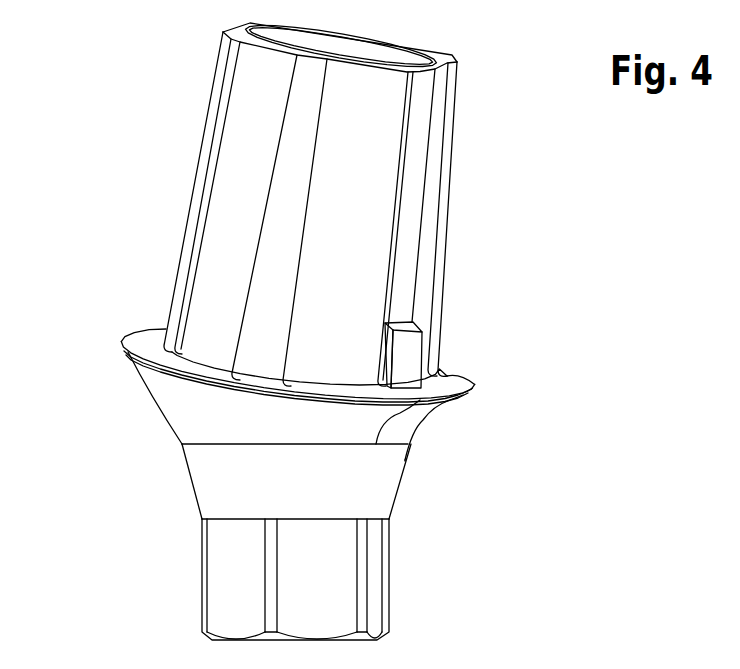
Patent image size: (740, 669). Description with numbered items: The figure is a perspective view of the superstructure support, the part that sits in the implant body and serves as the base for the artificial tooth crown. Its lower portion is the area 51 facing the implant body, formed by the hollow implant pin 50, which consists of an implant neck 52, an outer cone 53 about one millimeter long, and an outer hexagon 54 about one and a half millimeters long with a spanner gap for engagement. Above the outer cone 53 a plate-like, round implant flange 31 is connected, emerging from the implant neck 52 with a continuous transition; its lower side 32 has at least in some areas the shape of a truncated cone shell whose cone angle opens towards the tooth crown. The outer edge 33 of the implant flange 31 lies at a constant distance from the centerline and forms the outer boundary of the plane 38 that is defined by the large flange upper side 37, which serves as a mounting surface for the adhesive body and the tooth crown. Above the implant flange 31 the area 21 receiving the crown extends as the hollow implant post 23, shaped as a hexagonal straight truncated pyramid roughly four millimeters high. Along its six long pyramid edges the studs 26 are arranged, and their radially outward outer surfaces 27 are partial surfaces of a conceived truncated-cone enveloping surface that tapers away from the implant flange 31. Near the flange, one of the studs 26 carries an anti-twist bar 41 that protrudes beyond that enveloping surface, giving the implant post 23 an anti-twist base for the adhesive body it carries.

The area receiving the tooth crown 21 is at (190, 140).
The implant post 23 is at (172, 207).
The studs 26 is at (286, 228).
The outer surfaces 27 is at (407, 247).
The flange upper side 37 is at (152, 337).
The plane 38 is at (142, 342).
The implant flange 31 is at (115, 359).
The outer edge 33 is at (473, 383).
The lower side 32 is at (192, 407).
The anti-twist bar 41 is at (413, 350).
The implant neck 52 is at (407, 424).
The area facing the implant body 51 is at (180, 484).
The outer cone 53 is at (372, 491).
The implant pin 50 is at (192, 573).
The outer hexagon 54 is at (333, 578).